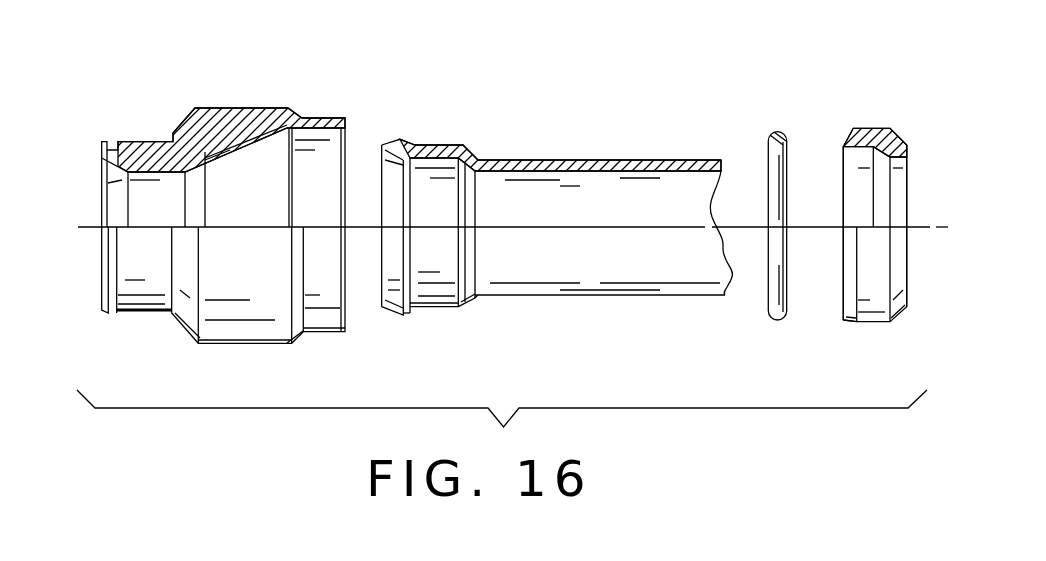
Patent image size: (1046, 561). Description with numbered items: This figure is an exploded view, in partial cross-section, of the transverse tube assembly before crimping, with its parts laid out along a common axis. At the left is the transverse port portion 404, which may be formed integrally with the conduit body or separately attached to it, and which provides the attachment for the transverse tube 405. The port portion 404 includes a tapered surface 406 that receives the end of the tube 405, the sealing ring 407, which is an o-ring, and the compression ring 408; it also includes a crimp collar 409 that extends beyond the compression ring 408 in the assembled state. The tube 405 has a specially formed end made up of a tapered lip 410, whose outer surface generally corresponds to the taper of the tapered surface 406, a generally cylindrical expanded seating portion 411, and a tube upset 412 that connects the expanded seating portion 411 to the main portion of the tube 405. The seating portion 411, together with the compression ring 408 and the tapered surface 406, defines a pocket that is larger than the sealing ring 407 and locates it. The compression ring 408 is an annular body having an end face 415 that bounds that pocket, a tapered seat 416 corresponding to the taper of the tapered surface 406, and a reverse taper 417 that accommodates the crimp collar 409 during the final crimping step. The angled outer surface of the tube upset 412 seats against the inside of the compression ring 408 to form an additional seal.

The transverse port portion 404 is at (244, 216).
The transverse tube 405 is at (547, 300).
The tapered surface 406 is at (232, 143).
The sealing ring 407 is at (769, 138).
The compression ring 408 is at (871, 297).
The crimp collar 409 is at (326, 334).
The tapered lip 410 is at (390, 143).
The seating portion 411 is at (437, 147).
The tube upset 412 is at (473, 148).
The end face 415 is at (843, 142).
The tapered seat 416 is at (844, 332).
The reverse taper 417 is at (896, 138).